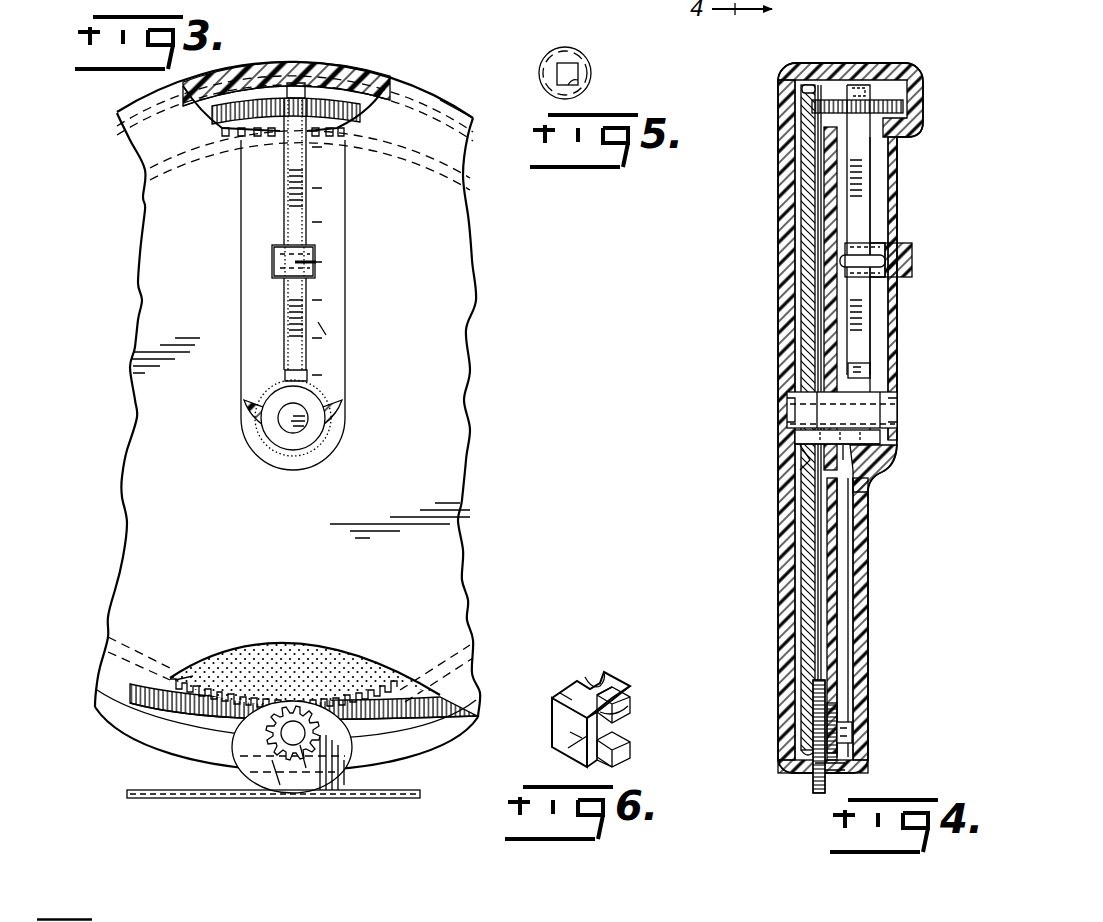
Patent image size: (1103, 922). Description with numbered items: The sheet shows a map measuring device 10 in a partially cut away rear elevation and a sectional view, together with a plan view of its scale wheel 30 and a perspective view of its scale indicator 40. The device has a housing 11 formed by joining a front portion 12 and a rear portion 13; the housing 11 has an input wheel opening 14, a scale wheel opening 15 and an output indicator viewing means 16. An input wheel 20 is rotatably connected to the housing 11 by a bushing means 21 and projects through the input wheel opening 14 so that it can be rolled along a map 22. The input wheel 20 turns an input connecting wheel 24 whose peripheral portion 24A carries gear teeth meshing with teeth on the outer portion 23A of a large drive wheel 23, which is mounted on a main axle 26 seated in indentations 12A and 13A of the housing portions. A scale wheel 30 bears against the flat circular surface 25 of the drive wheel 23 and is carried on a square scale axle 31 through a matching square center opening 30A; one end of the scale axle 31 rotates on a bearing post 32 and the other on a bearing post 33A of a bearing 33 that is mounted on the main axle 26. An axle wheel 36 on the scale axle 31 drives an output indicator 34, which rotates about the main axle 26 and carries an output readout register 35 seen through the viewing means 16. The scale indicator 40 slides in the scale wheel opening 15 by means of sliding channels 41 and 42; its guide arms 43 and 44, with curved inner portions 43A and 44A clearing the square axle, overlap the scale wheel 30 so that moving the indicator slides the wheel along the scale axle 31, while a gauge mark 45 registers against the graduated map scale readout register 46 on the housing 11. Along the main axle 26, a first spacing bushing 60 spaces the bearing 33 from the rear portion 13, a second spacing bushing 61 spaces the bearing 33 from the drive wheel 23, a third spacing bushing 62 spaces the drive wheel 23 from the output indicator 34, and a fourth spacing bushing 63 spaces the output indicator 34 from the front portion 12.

In FIG. 3, the measuring device 10 is at (440, 68).
In FIG. 4, the measuring device 10 is at (766, 732).
In FIG. 3, the housing 11 is at (456, 93).
In FIG. 4, the housing 11 is at (869, 666).
In FIG. 3, the front portion 12 is at (420, 740).
In FIG. 4, the front portion 12 is at (779, 605).
In FIG. 4, the indentation 12A is at (790, 421).
In FIG. 3, the rear portion 13 is at (455, 475).
In FIG. 4, the rear portion 13 is at (866, 608).
In FIG. 4, the indentation 13A is at (892, 410).
In FIG. 3, the input wheel opening 14 is at (335, 745).
In FIG. 4, the input wheel opening 14 is at (830, 775).
In FIG. 3, the scale wheel opening 15 is at (283, 345).
In FIG. 4, the scale wheel opening 15 is at (892, 378).
In FIG. 4, the output indicator viewing means 16 is at (785, 116).
In FIG. 3, the input wheel 20 is at (276, 786).
In FIG. 4, the input wheel 20 is at (818, 790).
In FIG. 3, the bushing means 21 is at (296, 732).
In FIG. 4, the bushing means 21 is at (854, 738).
In FIG. 3, the map 22 is at (410, 792).
In FIG. 3, the drive wheel 23 is at (275, 645).
In FIG. 4, the drive wheel 23 is at (838, 576).
In FIG. 3, the outer portion of drive wheel 23A is at (193, 676).
In FIG. 3, the input connecting wheel 24 is at (297, 762).
In FIG. 4, the input connecting wheel 24 is at (840, 716).
In FIG. 3, the peripheral portion 24A is at (306, 770).
In FIG. 3, the flat circular surface 25 is at (340, 665).
In FIG. 4, the flat circular surface 25 is at (838, 220).
In FIG. 3, the main axle 26 is at (293, 424).
In FIG. 4, the main axle 26 is at (795, 410).
In FIG. 3, the scale wheel 30 is at (270, 262).
In FIG. 5, the scale wheel 30 is at (578, 55).
In FIG. 4, the scale wheel 30 is at (848, 268).
In FIG. 5, the center opening 30A is at (580, 80).
In FIG. 3, the scale axle 31 is at (290, 208).
In FIG. 4, the scale axle 31 is at (865, 165).
In FIG. 3, the bearing post 32 is at (278, 90).
In FIG. 4, the bearing post 32 is at (897, 65).
In FIG. 3, the bearing 33 is at (285, 425).
In FIG. 4, the bearing 33 is at (884, 466).
In FIG. 4, the bearing post 33A is at (870, 362).
In FIG. 3, the output indicator 34 is at (272, 88).
In FIG. 4, the output indicator 34 is at (810, 280).
In FIG. 3, the output readout register 35 is at (235, 102).
In FIG. 4, the output readout register 35 is at (806, 92).
In FIG. 3, the axle wheel 36 is at (330, 97).
In FIG. 4, the axle wheel 36 is at (905, 106).
In FIG. 3, the map scale indicator 40 is at (276, 274).
In FIG. 6, the map scale indicator 40 is at (548, 728).
In FIG. 4, the map scale indicator 40 is at (914, 258).
In FIG. 6, the sliding channel 41 is at (568, 690).
In FIG. 6, the sliding channel 42 is at (606, 758).
In FIG. 6, the scale wheel guide arm 43 is at (630, 690).
In FIG. 6, the curved inner portion 43A is at (608, 688).
In FIG. 4, the curved inner portion 43A is at (872, 245).
In FIG. 6, the scale wheel guide arm 44 is at (632, 736).
In FIG. 6, the curved inner portion 44A is at (632, 706).
In FIG. 4, the curved inner portion 44A is at (877, 264).
In FIG. 3, the gauge mark 45 is at (318, 262).
In FIG. 6, the gauge mark 45 is at (575, 736).
In FIG. 3, the map scale readout register 46 is at (322, 335).
In FIG. 4, the first spacing bushing 60 is at (895, 441).
In FIG. 4, the second spacing bushing 61 is at (845, 446).
In FIG. 4, the third spacing bushing 62 is at (810, 460).
In FIG. 4, the fourth spacing bushing 63 is at (800, 446).